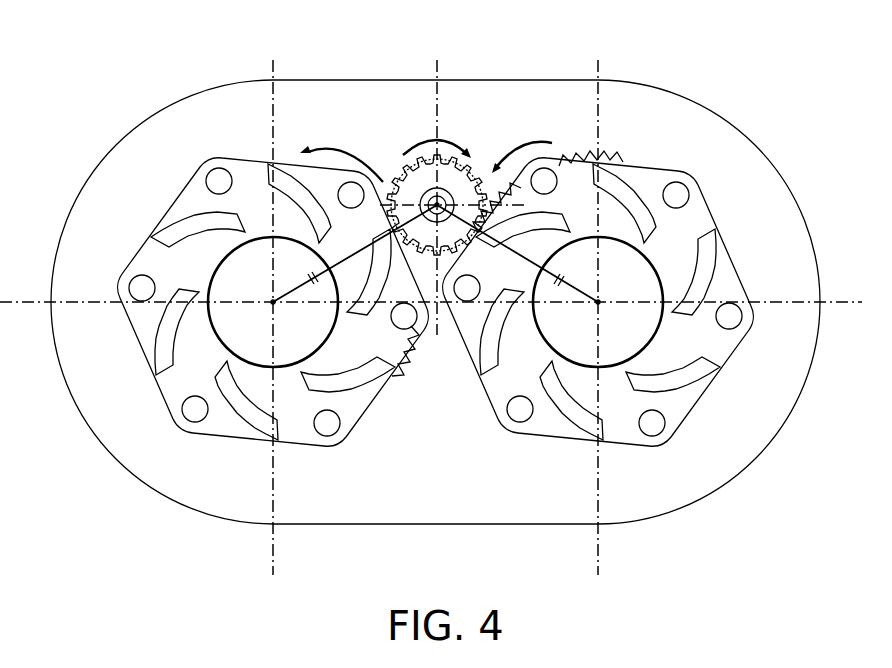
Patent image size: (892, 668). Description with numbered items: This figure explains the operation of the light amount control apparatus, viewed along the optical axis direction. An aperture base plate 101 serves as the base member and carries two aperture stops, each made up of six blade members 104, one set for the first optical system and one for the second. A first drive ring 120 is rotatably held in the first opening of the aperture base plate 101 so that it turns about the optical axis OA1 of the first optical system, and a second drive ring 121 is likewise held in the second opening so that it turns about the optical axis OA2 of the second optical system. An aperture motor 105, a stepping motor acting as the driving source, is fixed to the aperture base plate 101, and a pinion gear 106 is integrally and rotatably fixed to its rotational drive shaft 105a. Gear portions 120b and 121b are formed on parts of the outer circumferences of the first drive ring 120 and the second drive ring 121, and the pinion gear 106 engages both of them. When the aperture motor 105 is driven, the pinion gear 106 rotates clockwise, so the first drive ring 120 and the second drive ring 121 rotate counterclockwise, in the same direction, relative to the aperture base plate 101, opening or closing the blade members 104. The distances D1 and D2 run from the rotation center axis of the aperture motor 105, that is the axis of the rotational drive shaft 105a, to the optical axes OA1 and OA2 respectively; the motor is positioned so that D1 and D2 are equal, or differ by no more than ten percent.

The aperture base plate 101 is at (212, 88).
The blade members 104 is at (138, 268).
The aperture motor 105 is at (383, 182).
The rotational drive shaft 105a is at (427, 193).
The pinion gear 106 is at (466, 180).
The first drive ring 120 is at (168, 212).
The gear portion 120b is at (418, 360).
The second drive ring 121 is at (724, 242).
The gear portion 121b is at (606, 157).
The distance D1 is at (355, 253).
The distance D2 is at (517, 253).
The optical axis OA1 is at (273, 302).
The optical axis OA2 is at (598, 302).